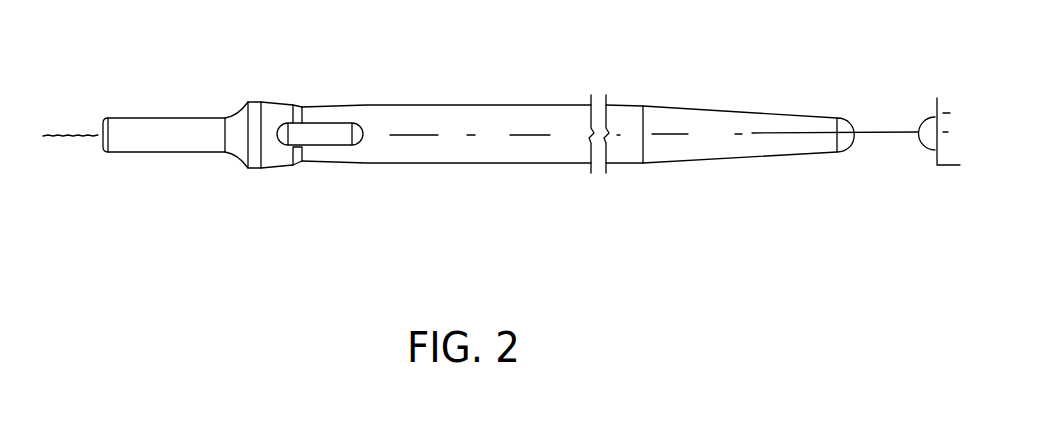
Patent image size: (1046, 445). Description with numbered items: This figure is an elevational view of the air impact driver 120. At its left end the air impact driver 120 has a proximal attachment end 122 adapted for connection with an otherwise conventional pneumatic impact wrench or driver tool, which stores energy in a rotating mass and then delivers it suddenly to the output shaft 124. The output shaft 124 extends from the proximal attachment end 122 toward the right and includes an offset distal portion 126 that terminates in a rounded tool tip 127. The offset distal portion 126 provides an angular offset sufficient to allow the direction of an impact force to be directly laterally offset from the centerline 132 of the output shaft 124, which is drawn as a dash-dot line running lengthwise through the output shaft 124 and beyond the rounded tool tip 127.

The air impact driver 120 is at (501, 157).
The proximal attachment end 122 is at (125, 133).
The output shaft 124 is at (542, 118).
The offset distal portion 126 is at (702, 120).
The rounded tool tip 127 is at (845, 153).
The centerline 132 is at (793, 132).